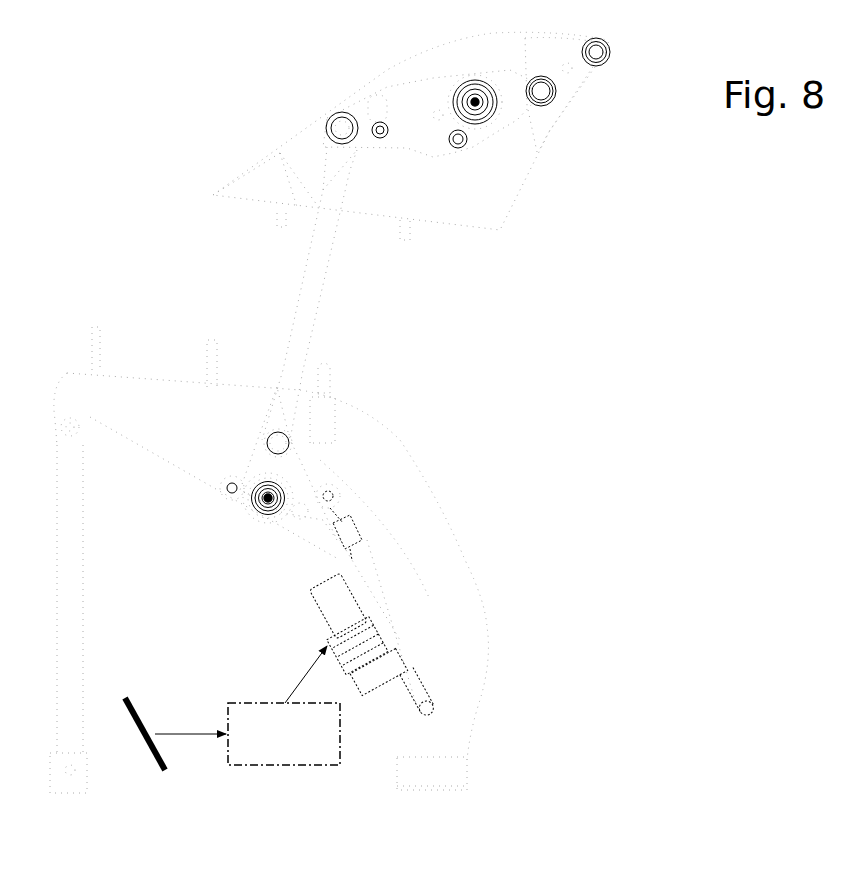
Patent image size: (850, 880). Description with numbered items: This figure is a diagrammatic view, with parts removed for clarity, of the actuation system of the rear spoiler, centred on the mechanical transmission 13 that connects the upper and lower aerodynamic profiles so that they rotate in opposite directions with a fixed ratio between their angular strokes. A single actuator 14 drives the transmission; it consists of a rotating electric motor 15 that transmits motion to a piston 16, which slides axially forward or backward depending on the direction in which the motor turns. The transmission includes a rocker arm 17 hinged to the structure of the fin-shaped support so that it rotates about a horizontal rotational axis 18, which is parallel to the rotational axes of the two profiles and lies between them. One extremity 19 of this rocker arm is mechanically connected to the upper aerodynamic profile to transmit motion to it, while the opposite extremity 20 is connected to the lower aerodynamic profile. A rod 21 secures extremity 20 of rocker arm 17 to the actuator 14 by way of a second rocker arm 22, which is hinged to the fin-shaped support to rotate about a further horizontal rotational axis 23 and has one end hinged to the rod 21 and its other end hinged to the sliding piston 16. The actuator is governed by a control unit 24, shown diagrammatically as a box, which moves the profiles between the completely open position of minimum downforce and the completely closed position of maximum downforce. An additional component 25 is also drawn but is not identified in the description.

The mechanical transmission 13 is at (744, 716).
The actuator 14 is at (289, 647).
The rotating electric motor 15 is at (328, 597).
The piston 16 is at (345, 522).
The rocker arm 17 is at (413, 100).
The horizontal rotational axis 18 is at (478, 104).
The extremity 19 is at (575, 91).
The extremity 20 is at (369, 162).
The rod 21 is at (312, 287).
The rocker arm 22 is at (300, 465).
The horizontal rotational axis 23 is at (262, 500).
The control unit 24 is at (284, 705).
The sensor rod 25 is at (128, 700).